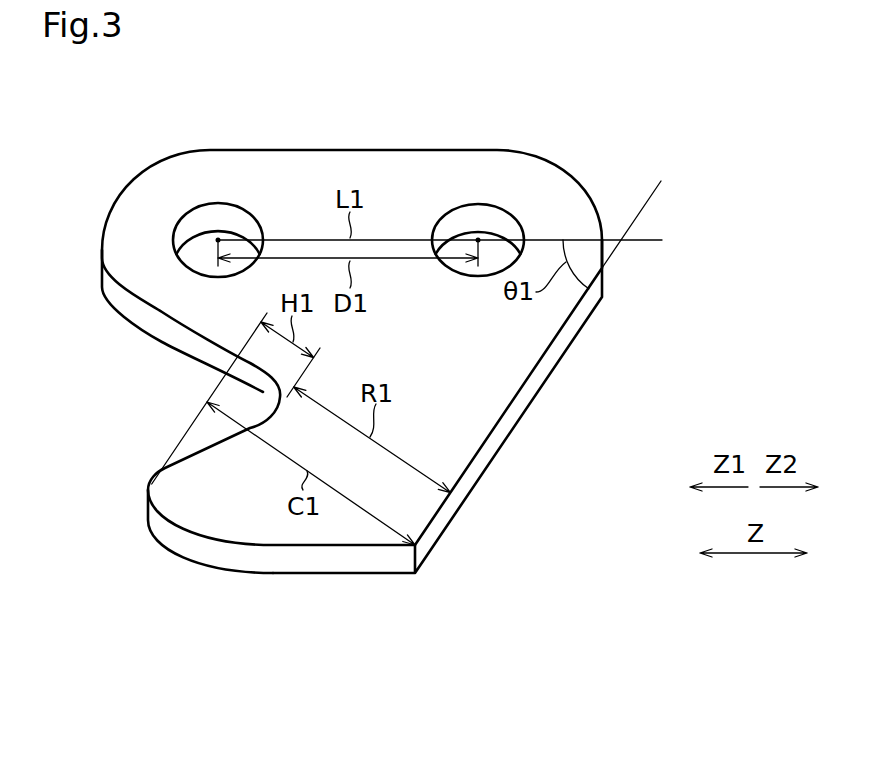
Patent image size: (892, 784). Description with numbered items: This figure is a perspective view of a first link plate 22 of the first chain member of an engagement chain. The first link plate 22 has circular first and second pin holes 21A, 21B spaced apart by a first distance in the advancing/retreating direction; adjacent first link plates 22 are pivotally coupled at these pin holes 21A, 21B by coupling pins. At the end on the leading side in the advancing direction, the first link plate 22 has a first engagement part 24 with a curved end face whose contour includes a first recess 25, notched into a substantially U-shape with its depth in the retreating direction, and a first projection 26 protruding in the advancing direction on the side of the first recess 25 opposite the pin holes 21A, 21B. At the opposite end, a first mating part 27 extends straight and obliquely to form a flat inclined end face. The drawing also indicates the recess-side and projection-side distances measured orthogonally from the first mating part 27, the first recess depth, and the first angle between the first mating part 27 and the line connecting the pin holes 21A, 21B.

The first pin hole 21A is at (219, 217).
The second pin hole 21B is at (479, 217).
The first link plate 22 is at (618, 128).
The first engagement part 24 is at (70, 410).
The first recess 25 is at (266, 392).
The first projection 26 is at (148, 491).
The first mating part 27 is at (508, 424).